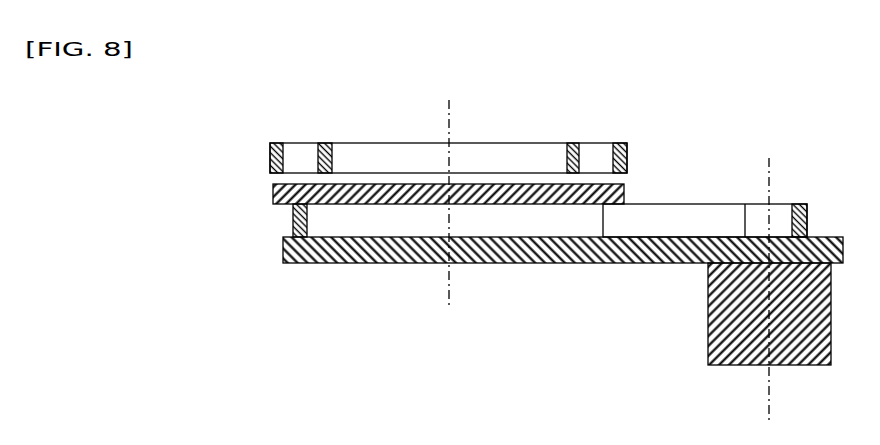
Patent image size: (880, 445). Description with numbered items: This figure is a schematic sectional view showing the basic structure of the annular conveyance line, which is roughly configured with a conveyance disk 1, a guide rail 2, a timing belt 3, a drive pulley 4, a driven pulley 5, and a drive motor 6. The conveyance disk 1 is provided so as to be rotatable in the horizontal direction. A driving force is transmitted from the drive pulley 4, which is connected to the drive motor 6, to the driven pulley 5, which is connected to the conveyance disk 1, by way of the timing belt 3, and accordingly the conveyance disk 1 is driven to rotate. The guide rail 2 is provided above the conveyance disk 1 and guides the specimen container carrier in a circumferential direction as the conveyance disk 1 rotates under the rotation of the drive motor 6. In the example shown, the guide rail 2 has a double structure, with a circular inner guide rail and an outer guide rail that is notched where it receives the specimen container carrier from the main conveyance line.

The conveyance disk 1 is at (273, 188).
The guide rail 2 is at (537, 143).
The timing belt 3 is at (683, 213).
The drive pulley 4 is at (783, 213).
The driven pulley 5 is at (322, 225).
The drive motor 6 is at (708, 310).